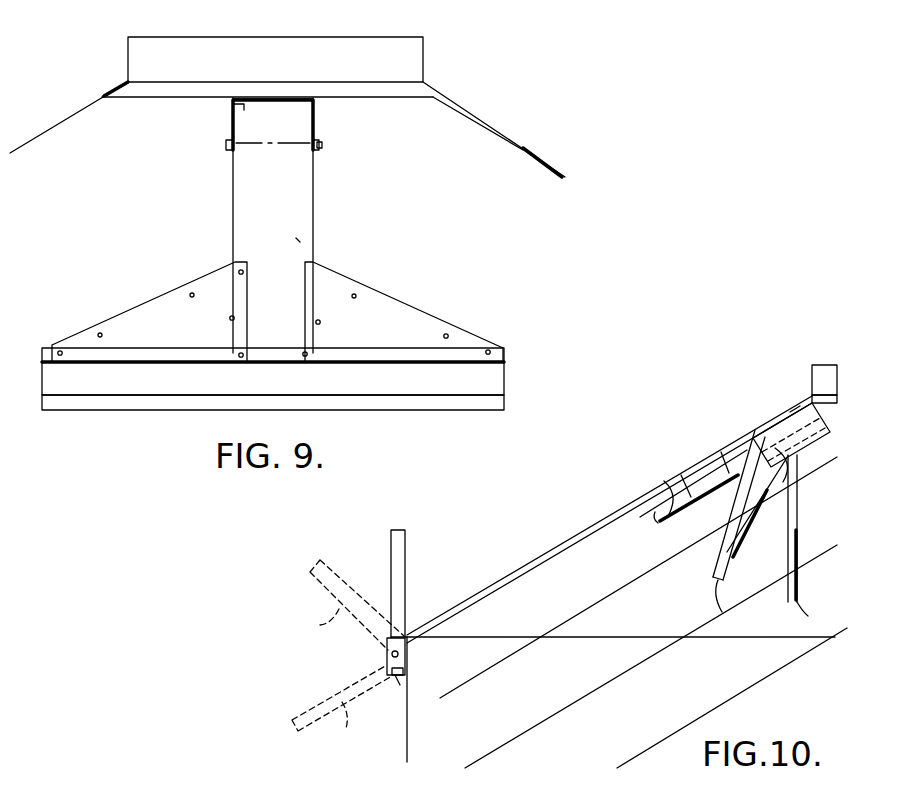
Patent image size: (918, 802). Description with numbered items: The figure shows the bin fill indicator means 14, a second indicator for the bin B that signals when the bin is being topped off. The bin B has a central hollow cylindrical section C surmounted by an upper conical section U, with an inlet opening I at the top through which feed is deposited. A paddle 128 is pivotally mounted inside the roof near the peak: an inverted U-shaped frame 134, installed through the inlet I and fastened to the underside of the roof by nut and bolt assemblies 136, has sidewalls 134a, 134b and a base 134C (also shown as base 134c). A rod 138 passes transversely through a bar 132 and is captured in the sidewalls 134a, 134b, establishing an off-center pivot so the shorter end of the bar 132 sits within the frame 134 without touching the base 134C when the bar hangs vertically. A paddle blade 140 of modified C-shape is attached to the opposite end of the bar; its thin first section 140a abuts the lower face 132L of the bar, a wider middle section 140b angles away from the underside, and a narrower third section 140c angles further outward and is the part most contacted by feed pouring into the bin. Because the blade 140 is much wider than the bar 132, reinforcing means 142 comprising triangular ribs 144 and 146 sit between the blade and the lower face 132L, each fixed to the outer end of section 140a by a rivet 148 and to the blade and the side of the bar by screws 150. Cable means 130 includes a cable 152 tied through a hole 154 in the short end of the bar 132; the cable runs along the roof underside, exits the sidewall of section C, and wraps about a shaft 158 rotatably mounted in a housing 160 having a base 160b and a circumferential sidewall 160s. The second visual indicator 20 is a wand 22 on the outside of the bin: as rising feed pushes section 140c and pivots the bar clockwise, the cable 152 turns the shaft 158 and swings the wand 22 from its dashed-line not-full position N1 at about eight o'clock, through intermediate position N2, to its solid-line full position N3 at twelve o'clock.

In FIG. 9, the bin fill indicator means 14 is at (160, 218).
In FIG. 10, the bin fill indicator means 14 is at (520, 505).
In FIG. 10, the second visual indicator 20 is at (430, 560).
In FIG. 10, the wand 22 is at (391, 562).
In FIG. 9, the paddle 128 is at (300, 242).
In FIG. 10, the paddle 128 is at (734, 492).
In FIG. 10, the cable means 130 is at (566, 546).
In FIG. 9, the bar 132 is at (233, 216).
In FIG. 10, the bar 132 is at (720, 462).
In FIG. 9, the lower face of the bar 132L is at (295, 240).
In FIG. 10, the lower face of the bar 132L is at (798, 487).
In FIG. 9, the frame 134 is at (228, 128).
In FIG. 10, the frame 134 is at (750, 447).
In FIG. 9, the frame sidewall 134a is at (233, 150).
In FIG. 9, the frame sidewall 134b is at (320, 152).
In FIG. 10, the frame sidewall 134b is at (815, 412).
In FIG. 9, the frame base 134C is at (233, 117).
In FIG. 10, the frame base 134c is at (800, 410).
In FIG. 10, the nut and bolt assemblies 136 is at (795, 408).
In FIG. 9, the rod 138 is at (322, 146).
In FIG. 9, the paddle blade 140 is at (306, 383).
In FIG. 10, the paddle blade 140 is at (724, 533).
In FIG. 9, the first blade section 140a is at (505, 353).
In FIG. 10, the first blade section 140a is at (672, 500).
In FIG. 9, the middle blade section 140b is at (505, 370).
In FIG. 10, the middle blade section 140b is at (660, 520).
In FIG. 9, the third blade section 140c is at (505, 405).
In FIG. 10, the third blade section 140c is at (624, 548).
In FIG. 9, the reinforcing means 142 is at (153, 291).
In FIG. 9, the triangular rib 144 is at (202, 276).
In FIG. 9, the triangular rib 146 is at (440, 266).
In FIG. 10, the triangular rib 146 is at (683, 476).
In FIG. 9, the rivet 148 is at (60, 352).
In FIG. 9, the screws 150 is at (243, 275).
In FIG. 10, the cable 152 is at (523, 572).
In FIG. 9, the hole 154 is at (285, 112).
In FIG. 10, the shaft 158 is at (405, 672).
In FIG. 10, the housing 160 is at (420, 680).
In FIG. 10, the housing base 160b is at (407, 655).
In FIG. 10, the housing sidewall 160s is at (392, 676).
In FIG. 9, the inlet opening I is at (313, 33).
In FIG. 10, the inlet opening I is at (825, 362).
In FIG. 9, the bin B is at (488, 38).
In FIG. 10, the bin B is at (398, 734).
In FIG. 9, the upper conical section U is at (527, 145).
In FIG. 10, the upper conical section U is at (598, 528).
In FIG. 10, the central cylindrical section C is at (407, 716).
In FIG. 10, the not full position N1 is at (316, 698).
In FIG. 10, the node position 2 N2 is at (350, 555).
In FIG. 10, the full position N3 is at (409, 580).